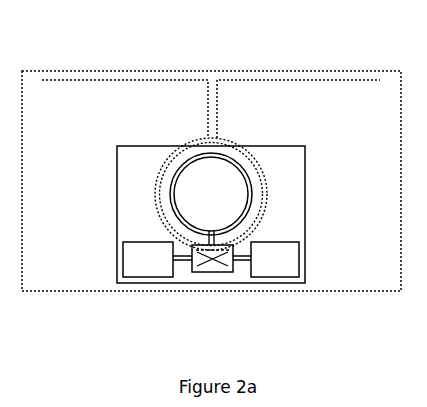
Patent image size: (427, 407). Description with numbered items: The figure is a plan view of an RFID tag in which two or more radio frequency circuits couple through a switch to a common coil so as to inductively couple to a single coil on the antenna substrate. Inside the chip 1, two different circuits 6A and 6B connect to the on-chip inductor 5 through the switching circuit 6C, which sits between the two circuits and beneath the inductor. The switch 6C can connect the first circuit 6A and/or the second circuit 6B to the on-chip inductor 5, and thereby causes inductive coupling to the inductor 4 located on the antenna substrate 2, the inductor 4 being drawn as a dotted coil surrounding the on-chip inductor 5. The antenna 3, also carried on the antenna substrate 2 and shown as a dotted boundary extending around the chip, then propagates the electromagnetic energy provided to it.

The chip 1 is at (117, 170).
The antenna substrate 2 is at (283, 71).
The antenna 3 is at (120, 80).
The inductor 4 is at (167, 160).
The on-chip inductor 5 is at (236, 157).
The first circuit 6A is at (135, 241).
The second circuit 6B is at (287, 241).
The switching circuit 6C is at (213, 272).